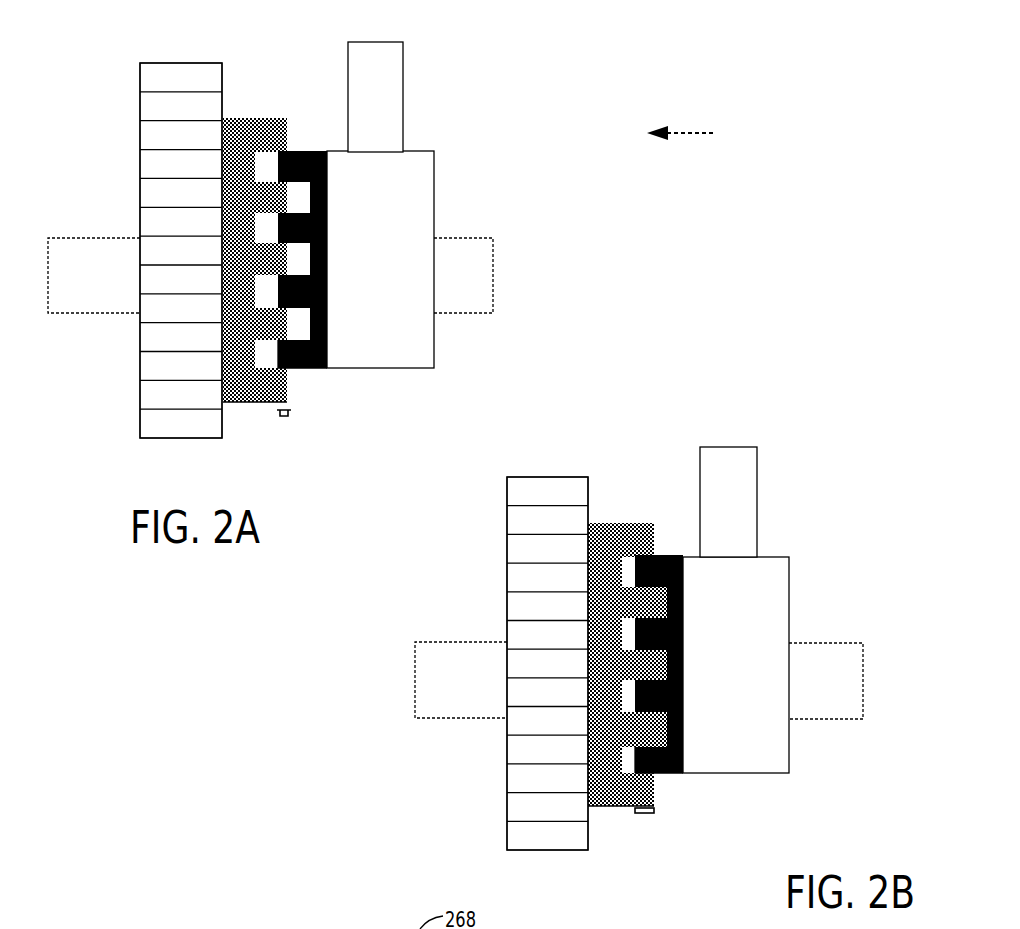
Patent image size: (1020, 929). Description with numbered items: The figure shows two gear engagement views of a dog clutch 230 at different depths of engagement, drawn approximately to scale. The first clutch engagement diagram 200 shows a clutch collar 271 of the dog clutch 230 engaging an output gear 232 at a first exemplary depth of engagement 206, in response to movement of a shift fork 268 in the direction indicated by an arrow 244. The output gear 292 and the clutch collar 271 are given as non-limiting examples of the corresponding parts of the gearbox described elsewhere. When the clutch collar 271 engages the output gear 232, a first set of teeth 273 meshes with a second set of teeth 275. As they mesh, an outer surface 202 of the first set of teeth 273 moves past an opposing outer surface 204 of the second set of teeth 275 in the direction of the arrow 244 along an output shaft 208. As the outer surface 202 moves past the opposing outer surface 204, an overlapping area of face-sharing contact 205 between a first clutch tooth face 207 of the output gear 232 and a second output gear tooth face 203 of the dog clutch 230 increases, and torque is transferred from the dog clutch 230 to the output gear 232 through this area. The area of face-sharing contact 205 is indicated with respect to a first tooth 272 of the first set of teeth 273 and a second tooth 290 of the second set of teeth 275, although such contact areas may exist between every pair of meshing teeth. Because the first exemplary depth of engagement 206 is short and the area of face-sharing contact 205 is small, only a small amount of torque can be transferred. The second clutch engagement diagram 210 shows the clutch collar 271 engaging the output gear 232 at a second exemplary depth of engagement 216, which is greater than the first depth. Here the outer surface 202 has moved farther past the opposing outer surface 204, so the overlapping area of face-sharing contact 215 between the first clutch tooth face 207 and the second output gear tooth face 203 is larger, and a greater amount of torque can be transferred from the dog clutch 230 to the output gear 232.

In FIG. 2A, the first clutch engagement diagram 200 is at (519, 26).
In FIG. 2A, the outer surface 202 is at (280, 357).
In FIG. 2B, the outer surface 202 is at (637, 758).
In FIG. 2A, the second output gear tooth face 203 is at (270, 375).
In FIG. 2B, the second output gear tooth face 203 is at (630, 777).
In FIG. 2A, the opposing outer surface 204 is at (284, 370).
In FIG. 2B, the opposing outer surface 204 is at (647, 774).
In FIG. 2A, the area of face-sharing contact 205 is at (290, 370).
In FIG. 2A, the first exemplary depth of engagement 206 is at (283, 418).
In FIG. 2A, the first clutch tooth face 207 is at (297, 370).
In FIG. 2B, the first clutch tooth face 207 is at (662, 774).
In FIG. 2A, the output shaft 208 is at (490, 238).
In FIG. 2B, the output shaft 208 is at (639, 680).
In FIG. 2B, the second clutch engagement diagram 210 is at (825, 441).
In FIG. 2B, the area of face-sharing contact 215 is at (655, 774).
In FIG. 2B, the second exemplary depth of engagement 216 is at (645, 814).
In FIG. 2A, the dog clutch 230 is at (312, 56).
In FIG. 2B, the dog clutch 230 is at (678, 464).
In FIG. 2A, the output gear 232 is at (140, 104).
In FIG. 2B, the output gear 232 is at (507, 512).
In FIG. 2A, the arrow 244 is at (690, 134).
In FIG. 2A, the shift fork 268 is at (383, 42).
In FIG. 2B, the shift fork 268 is at (740, 447).
In FIG. 2A, the clutch collar 271 is at (398, 271).
In FIG. 2B, the clutch collar 271 is at (754, 676).
In FIG. 2A, the first tooth 272 is at (300, 369).
In FIG. 2B, the first tooth 272 is at (672, 774).
In FIG. 2A, the first set of teeth 273 is at (298, 136).
In FIG. 2B, the first set of teeth 273 is at (676, 542).
In FIG. 2A, the second set of teeth 275 is at (283, 94).
In FIG. 2B, the second set of teeth 275 is at (640, 501).
In FIG. 2A, the second tooth 290 is at (237, 403).
In FIG. 2B, the second tooth 290 is at (597, 808).
In FIG. 2A, the output gear 292 is at (222, 63).
In FIG. 2B, the output gear 292 is at (588, 477).